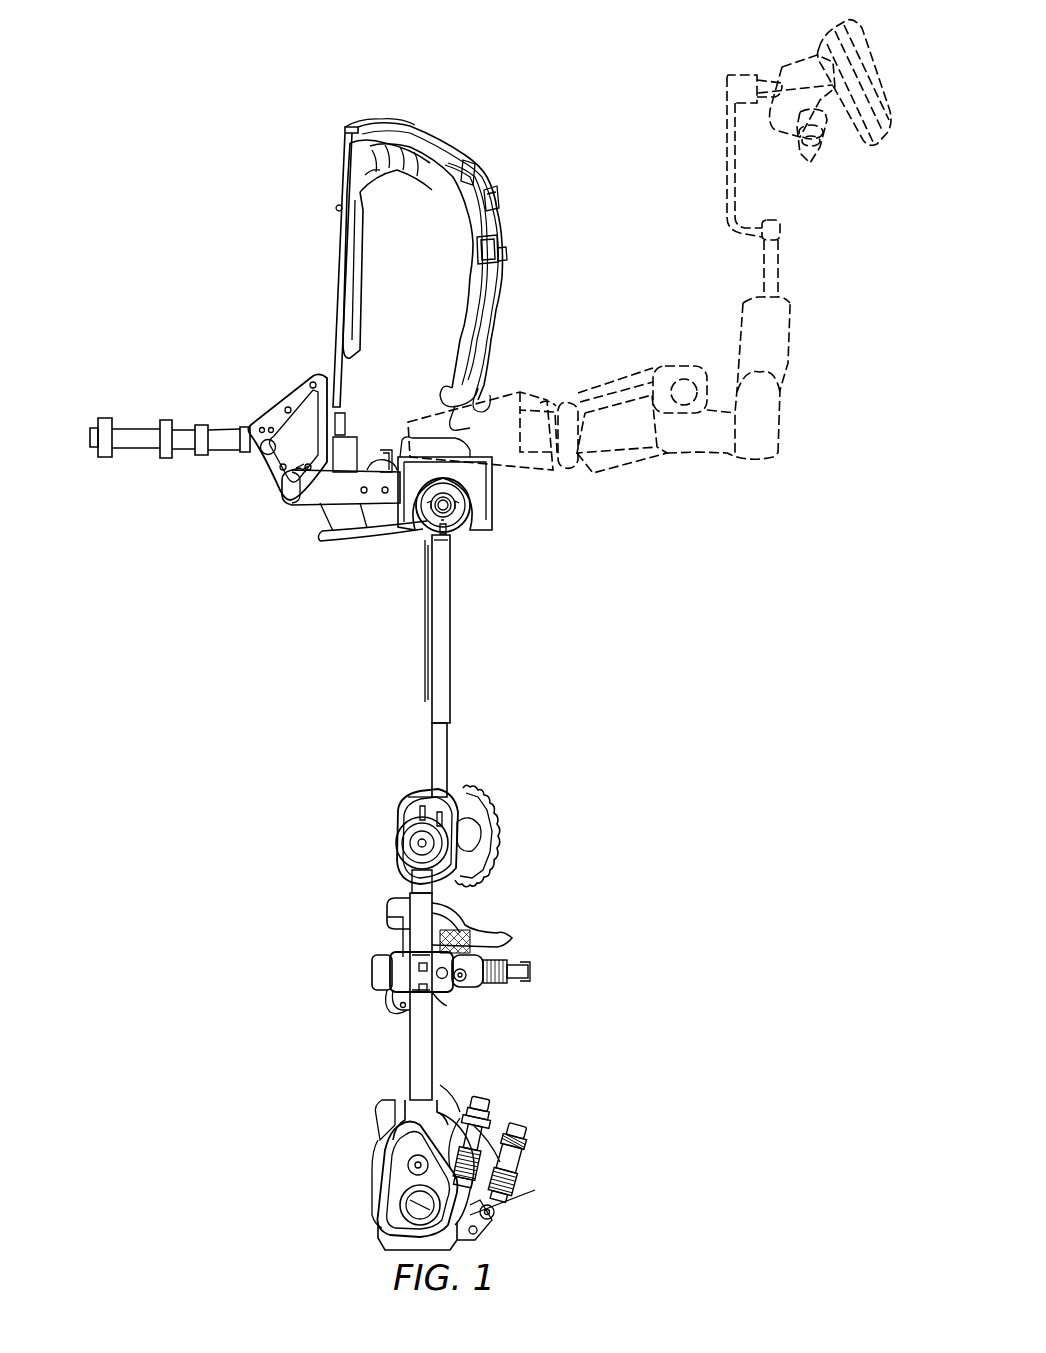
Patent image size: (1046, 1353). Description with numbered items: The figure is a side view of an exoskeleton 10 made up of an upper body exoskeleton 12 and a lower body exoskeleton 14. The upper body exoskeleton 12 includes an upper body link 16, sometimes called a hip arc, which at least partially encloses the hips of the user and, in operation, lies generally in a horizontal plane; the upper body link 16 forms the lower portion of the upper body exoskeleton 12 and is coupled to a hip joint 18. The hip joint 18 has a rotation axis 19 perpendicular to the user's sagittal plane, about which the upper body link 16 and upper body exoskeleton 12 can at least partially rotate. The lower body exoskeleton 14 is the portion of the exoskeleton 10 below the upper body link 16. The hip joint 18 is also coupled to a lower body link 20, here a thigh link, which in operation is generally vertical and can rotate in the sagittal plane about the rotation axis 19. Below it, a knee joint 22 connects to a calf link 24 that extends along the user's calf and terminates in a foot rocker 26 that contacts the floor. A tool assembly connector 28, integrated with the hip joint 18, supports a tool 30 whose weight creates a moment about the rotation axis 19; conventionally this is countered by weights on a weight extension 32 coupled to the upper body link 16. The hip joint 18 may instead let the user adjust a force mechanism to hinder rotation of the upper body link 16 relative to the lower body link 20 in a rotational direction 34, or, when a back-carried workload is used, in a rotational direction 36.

The exoskeleton 10 is at (197, 62).
The upper body exoskeleton 12 is at (96, 497).
The lower body exoskeleton 14 is at (96, 1252).
The upper body link 16 is at (294, 492).
The hip joint 18 is at (460, 507).
The rotation axis 19 is at (434, 514).
The lower body link 20 is at (488, 782).
The knee joint 22 is at (508, 785).
The calf link 24 is at (525, 885).
The foot rocker 26 is at (542, 1108).
The tool assembly connector 28 is at (467, 472).
The tool 30 is at (874, 150).
The weight extension 32 is at (132, 430).
The rotational direction 34 is at (394, 370).
The rotational direction 36 is at (302, 503).